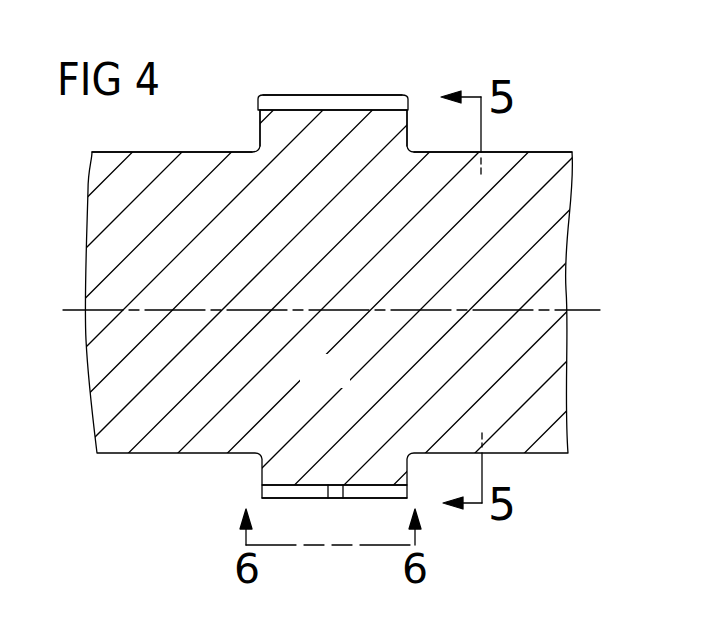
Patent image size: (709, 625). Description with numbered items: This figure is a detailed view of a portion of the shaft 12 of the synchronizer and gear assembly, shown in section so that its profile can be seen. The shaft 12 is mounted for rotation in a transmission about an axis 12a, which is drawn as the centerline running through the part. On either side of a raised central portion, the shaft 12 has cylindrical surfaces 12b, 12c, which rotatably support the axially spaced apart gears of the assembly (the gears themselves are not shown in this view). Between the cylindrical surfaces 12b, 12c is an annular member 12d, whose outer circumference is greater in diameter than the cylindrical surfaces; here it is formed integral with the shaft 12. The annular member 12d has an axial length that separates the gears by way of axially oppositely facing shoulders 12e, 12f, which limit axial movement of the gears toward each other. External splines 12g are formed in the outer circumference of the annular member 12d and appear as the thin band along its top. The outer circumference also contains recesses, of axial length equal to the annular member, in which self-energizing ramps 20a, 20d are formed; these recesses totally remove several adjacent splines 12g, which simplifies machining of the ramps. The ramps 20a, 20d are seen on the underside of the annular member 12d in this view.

The shaft 12 is at (345, 383).
The axis 12a is at (574, 297).
The cylindrical surface 12b is at (170, 151).
The cylindrical surface 12c is at (543, 152).
The annular member 12d is at (294, 78).
The shoulder 12e is at (259, 128).
The shoulder 12f is at (408, 125).
The external splines 12g is at (348, 103).
The self-energizing ramp 20a is at (395, 491).
The self-energizing ramp 20d is at (275, 491).